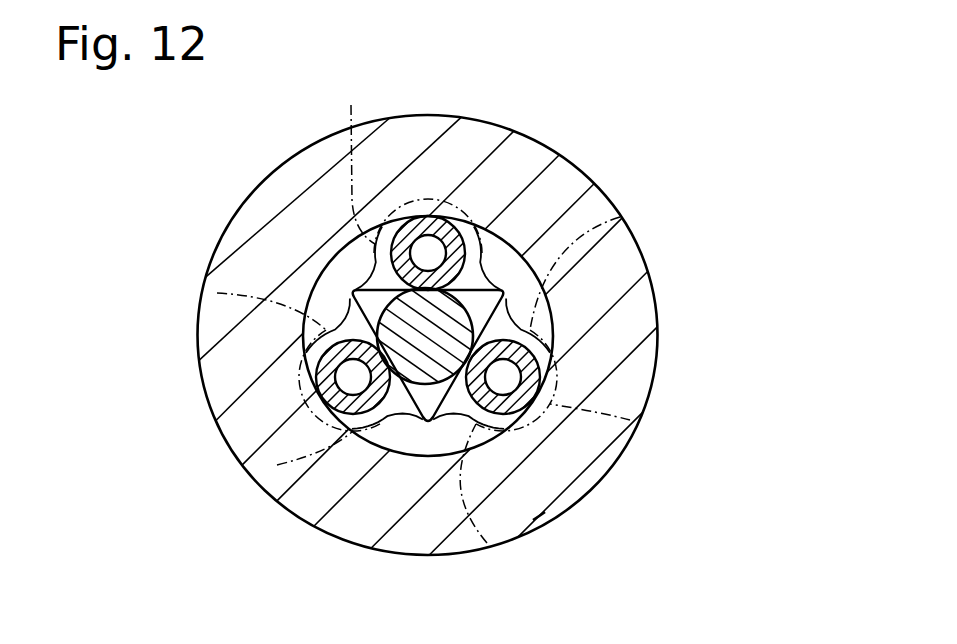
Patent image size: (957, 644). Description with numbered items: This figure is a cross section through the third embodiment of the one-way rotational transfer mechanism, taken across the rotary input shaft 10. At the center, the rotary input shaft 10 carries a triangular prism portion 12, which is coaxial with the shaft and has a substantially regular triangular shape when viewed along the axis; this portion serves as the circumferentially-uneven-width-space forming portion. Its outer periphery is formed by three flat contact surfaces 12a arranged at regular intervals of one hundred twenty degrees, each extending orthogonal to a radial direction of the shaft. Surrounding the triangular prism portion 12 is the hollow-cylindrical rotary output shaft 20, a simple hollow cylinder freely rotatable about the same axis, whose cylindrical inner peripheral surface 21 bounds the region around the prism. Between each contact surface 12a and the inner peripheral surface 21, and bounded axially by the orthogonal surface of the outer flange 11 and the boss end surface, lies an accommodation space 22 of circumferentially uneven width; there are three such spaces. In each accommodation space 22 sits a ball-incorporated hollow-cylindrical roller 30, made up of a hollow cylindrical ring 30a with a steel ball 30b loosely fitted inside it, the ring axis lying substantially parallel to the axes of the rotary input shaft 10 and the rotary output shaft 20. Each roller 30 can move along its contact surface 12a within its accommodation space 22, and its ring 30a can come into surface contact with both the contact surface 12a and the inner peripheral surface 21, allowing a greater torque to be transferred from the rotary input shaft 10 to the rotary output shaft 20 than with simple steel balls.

The rotary input shaft 10 is at (428, 362).
The outer flange 11 is at (206, 334).
The triangular prism portion 12 is at (352, 287).
The contact surface 12a is at (328, 266).
The hollow-cylindrical rotary output shaft 20 is at (633, 329).
The cylindrical inner peripheral surface 21 is at (533, 520).
The accommodation space 22 is at (596, 184).
The ball-incorporated hollow-cylindrical roller 30 is at (675, 537).
The hollow cylindrical ring 30a is at (517, 258).
The steel ball 30b is at (480, 224).